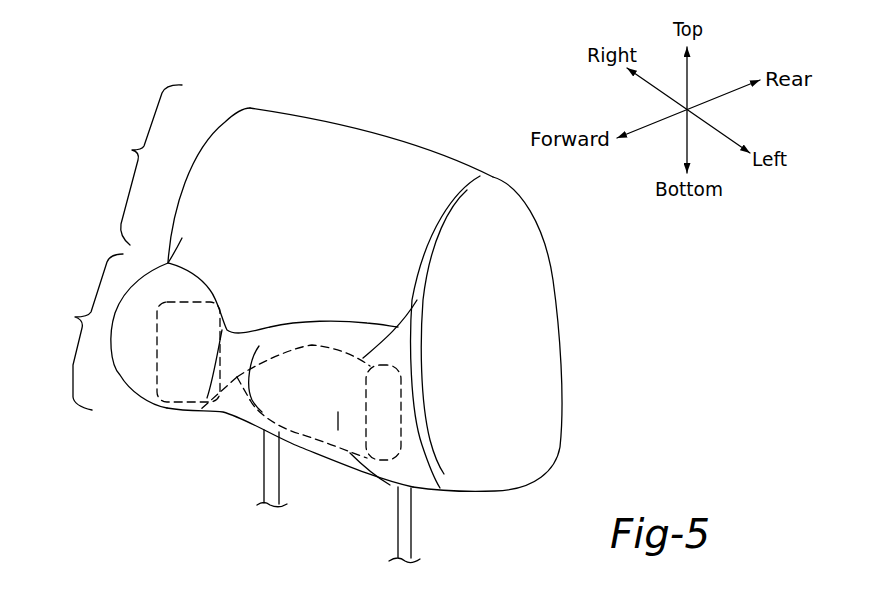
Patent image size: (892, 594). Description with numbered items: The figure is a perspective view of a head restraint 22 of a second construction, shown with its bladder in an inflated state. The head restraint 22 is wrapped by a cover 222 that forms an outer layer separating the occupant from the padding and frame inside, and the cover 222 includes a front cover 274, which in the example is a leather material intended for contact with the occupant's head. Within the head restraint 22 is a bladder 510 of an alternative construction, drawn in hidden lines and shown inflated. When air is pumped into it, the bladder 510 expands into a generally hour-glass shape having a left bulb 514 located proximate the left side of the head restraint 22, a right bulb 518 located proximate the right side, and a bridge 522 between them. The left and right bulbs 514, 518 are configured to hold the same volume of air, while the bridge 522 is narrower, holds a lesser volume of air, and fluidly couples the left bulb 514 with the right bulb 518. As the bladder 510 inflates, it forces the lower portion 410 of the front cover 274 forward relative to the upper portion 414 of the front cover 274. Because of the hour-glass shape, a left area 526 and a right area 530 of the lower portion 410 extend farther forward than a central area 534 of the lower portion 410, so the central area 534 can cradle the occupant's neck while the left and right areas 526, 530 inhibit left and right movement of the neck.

The head restraint 22 is at (288, 111).
The cover 222 is at (388, 167).
The front cover 274 is at (247, 127).
The lower portion of the front cover 410 is at (80, 332).
The upper portion of the front cover 414 is at (138, 165).
The bladder 510 is at (313, 345).
The left bulb 514 is at (401, 395).
The right bulb 518 is at (178, 375).
The bridge 522 is at (237, 377).
The left area 526 is at (307, 423).
The right area 530 is at (127, 357).
The central area 534 is at (233, 350).